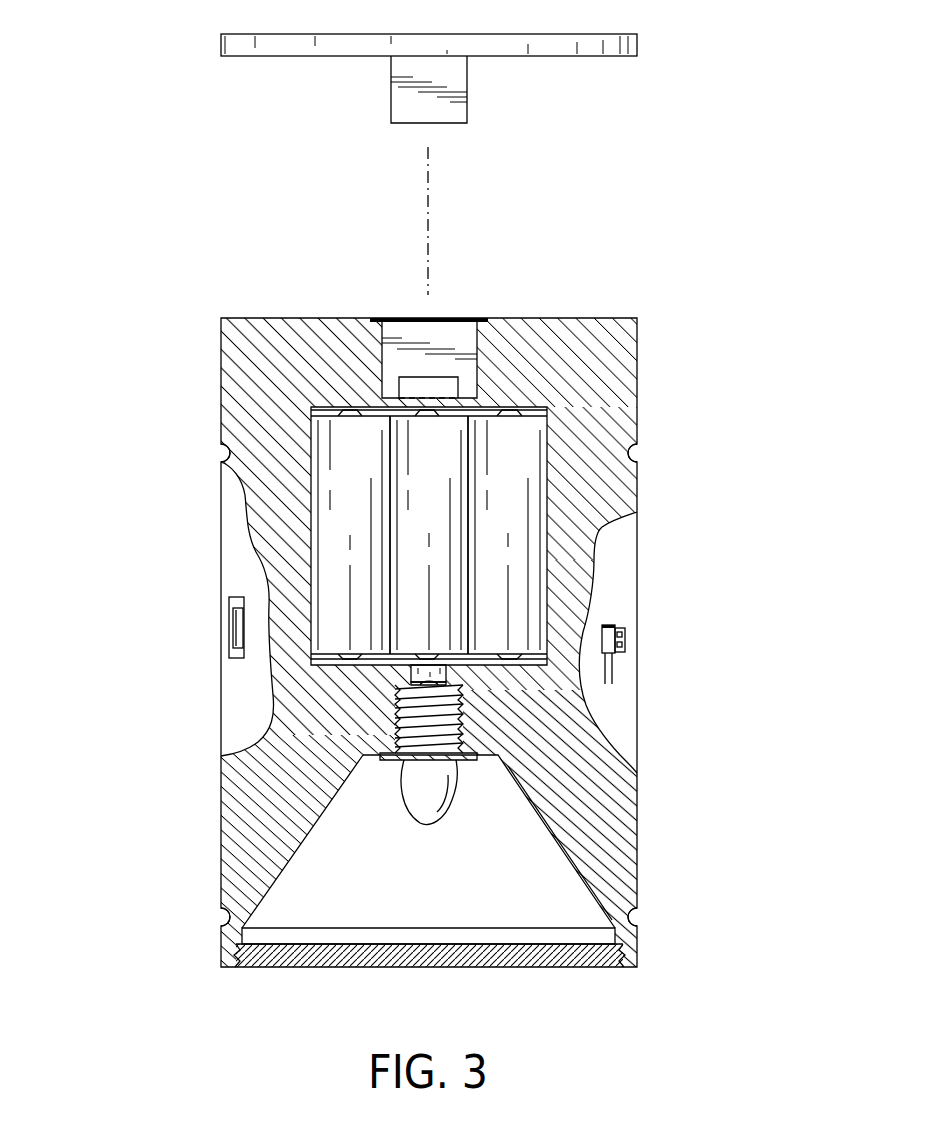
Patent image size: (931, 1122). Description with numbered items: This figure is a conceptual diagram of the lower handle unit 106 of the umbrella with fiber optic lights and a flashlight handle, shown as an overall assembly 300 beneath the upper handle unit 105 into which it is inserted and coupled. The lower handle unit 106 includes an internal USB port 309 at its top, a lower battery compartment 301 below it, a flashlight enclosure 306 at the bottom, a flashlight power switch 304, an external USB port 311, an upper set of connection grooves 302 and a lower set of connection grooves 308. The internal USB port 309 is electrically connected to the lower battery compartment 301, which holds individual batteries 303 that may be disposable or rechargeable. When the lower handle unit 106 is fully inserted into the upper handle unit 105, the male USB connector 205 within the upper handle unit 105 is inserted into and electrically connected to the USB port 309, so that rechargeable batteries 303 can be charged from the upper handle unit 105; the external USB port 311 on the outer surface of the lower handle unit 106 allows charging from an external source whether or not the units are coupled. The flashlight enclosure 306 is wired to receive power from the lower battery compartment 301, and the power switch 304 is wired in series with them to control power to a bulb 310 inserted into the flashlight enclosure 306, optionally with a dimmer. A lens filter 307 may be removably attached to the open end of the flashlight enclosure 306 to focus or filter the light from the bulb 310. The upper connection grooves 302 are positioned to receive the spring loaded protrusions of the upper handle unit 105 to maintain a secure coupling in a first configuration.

The light source assembly 300 is at (160, 174).
The upper handle unit 105 is at (637, 43).
The male USB connector 205 is at (467, 105).
The lower handle unit 106 is at (672, 566).
The internal USB port 309 is at (408, 333).
The lower battery compartment 301 is at (310, 455).
The batteries 303 is at (508, 438).
The upper set of connection grooves 302 is at (221, 453).
The external USB port 311 is at (229, 622).
The flashlight power switch 304 is at (625, 640).
The bulb 310 is at (417, 800).
The flashlight enclosure 306 is at (535, 808).
The lower set of connection grooves 308 is at (225, 920).
The lens filter 307 is at (556, 952).